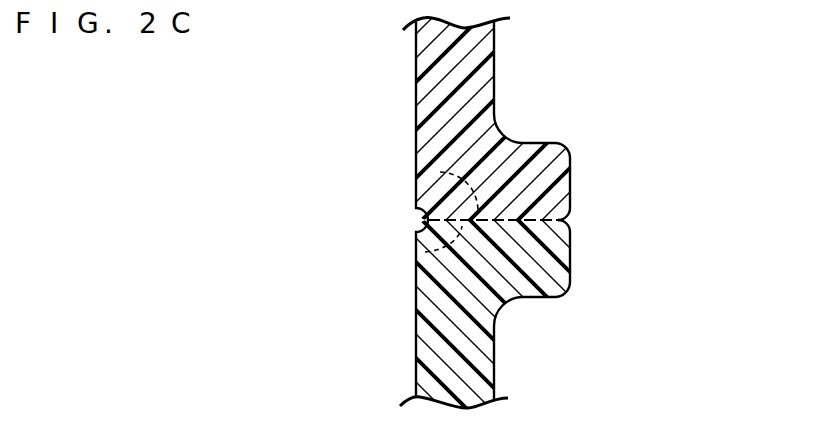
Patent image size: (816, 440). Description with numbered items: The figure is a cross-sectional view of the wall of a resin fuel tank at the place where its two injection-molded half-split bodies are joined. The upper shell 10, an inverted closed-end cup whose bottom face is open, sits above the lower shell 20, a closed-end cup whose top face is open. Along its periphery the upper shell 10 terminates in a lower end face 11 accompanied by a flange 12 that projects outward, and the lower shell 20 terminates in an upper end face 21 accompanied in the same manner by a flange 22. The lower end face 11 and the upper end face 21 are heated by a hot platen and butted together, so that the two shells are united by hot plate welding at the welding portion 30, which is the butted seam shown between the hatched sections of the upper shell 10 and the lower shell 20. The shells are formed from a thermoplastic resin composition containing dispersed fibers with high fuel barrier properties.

The upper shell 10 is at (486, 72).
The lower end face 11 is at (425, 252).
The flange 12 is at (572, 180).
The lower shell 20 is at (487, 347).
The upper end face 21 is at (440, 172).
The flange 22 is at (562, 253).
The welding portion 30 is at (602, 226).